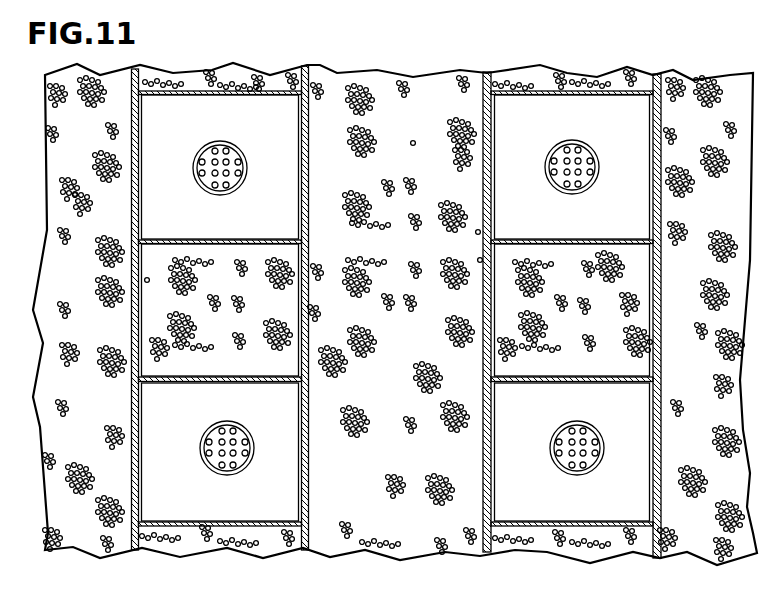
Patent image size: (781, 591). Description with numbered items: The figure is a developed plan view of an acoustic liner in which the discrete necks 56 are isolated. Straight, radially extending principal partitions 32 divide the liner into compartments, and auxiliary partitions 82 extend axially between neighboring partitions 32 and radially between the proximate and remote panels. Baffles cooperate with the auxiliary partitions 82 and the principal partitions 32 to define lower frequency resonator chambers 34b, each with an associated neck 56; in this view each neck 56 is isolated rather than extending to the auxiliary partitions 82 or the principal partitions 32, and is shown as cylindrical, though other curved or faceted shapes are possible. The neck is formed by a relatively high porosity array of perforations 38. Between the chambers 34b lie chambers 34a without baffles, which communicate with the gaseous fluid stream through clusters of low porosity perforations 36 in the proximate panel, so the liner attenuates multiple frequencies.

The partitions 32 is at (131, 413).
The resonator chamber 34a is at (120, 342).
The lower frequency resonator chamber 34b is at (190, 142).
The perforations 36 is at (362, 198).
The perforations 38 is at (215, 160).
The neck 56 is at (245, 183).
The auxiliary partitions 82 is at (202, 238).